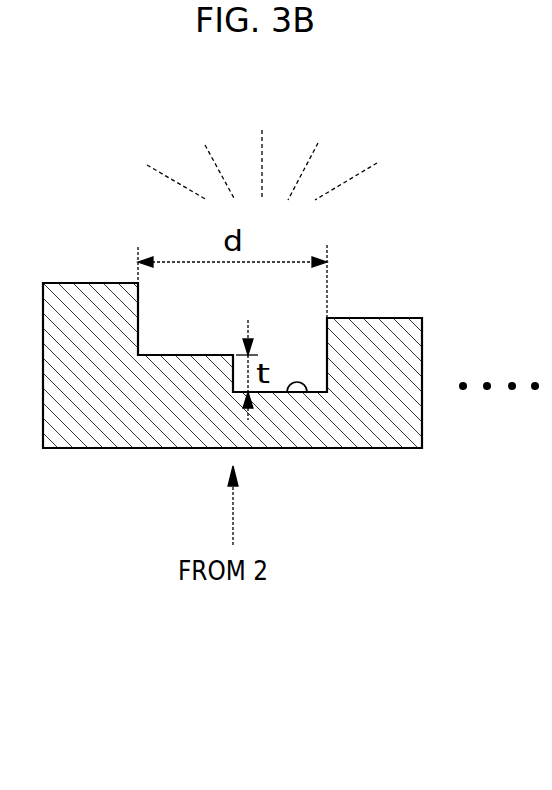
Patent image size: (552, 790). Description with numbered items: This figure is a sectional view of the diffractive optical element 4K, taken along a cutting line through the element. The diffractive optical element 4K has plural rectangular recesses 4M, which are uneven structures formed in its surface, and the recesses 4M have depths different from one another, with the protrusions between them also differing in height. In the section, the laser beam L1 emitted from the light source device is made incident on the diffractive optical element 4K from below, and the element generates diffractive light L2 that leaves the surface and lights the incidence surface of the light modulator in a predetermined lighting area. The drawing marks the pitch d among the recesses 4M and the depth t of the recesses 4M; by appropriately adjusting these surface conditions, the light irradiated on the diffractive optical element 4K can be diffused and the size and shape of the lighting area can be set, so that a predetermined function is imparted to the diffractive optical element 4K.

The diffractive optical element 4K is at (422, 423).
The recesses 4M is at (307, 392).
The laser beam L1 is at (230, 515).
The diffractive light L2 is at (332, 190).